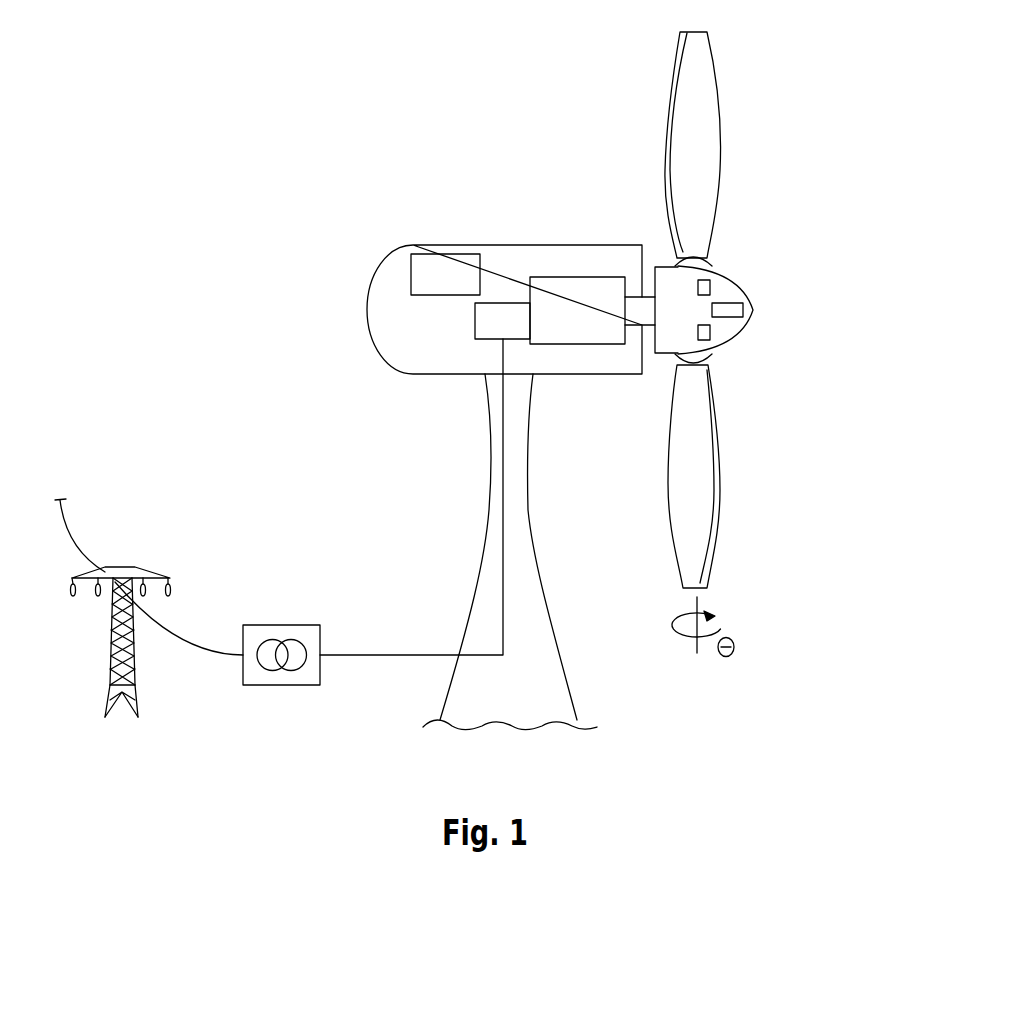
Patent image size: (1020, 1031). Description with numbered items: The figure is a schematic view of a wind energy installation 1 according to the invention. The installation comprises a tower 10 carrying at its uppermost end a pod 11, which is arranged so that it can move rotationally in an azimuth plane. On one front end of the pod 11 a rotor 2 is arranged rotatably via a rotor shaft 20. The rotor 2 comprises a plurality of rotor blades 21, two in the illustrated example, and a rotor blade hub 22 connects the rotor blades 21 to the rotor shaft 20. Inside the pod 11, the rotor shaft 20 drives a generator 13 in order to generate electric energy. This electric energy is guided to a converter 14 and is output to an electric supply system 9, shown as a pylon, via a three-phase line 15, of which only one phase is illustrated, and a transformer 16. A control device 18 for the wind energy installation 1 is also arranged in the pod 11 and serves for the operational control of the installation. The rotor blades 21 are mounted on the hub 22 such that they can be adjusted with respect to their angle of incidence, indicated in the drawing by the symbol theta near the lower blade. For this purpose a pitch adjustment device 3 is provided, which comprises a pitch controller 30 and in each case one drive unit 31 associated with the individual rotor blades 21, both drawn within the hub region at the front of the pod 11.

The wind energy installation 1 is at (428, 424).
The rotor 2 is at (650, 132).
The pitch adjustment device 3 is at (762, 264).
The electric supply system 9 is at (140, 568).
The tower 10 is at (489, 507).
The pod 11 is at (382, 272).
The generator 13 is at (564, 326).
The converter 14 is at (490, 334).
The three-phase line 15 is at (380, 655).
The transformer 16 is at (280, 625).
The control device 18 is at (433, 289).
The rotor shaft 20 is at (650, 287).
The rotor blade 21 is at (710, 132).
The rotor blade hub 22 is at (672, 258).
The pitch controller 30 is at (731, 312).
The drive unit 31 is at (710, 290).